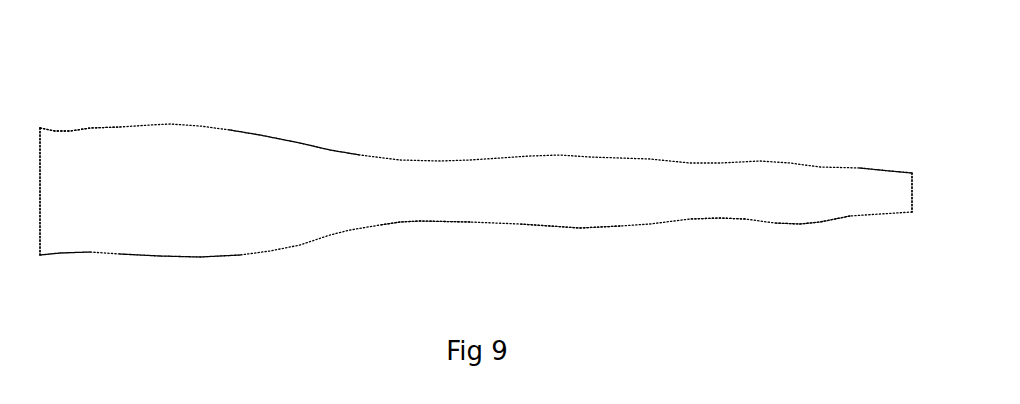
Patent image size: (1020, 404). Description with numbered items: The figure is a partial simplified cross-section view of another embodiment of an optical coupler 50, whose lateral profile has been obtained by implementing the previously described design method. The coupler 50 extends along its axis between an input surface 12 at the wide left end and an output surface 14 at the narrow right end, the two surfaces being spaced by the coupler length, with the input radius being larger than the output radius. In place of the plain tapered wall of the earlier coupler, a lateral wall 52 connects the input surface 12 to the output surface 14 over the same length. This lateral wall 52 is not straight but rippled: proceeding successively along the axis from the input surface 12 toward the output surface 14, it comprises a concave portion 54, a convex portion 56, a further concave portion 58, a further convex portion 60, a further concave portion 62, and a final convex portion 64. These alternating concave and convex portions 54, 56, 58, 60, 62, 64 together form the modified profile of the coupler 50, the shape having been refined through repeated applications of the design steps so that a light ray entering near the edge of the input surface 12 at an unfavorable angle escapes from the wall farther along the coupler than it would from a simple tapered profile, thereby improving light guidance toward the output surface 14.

The optical coupler 50 is at (596, 120).
The input surface 12 is at (40, 183).
The output surface 14 is at (912, 188).
The lateral wall 52 is at (333, 150).
The concave portion 54 is at (62, 253).
The convex portion 56 is at (178, 257).
The concave portion 58 is at (412, 223).
The convex portion 60 is at (568, 228).
The concave portion 62 is at (714, 221).
The convex portion 64 is at (808, 222).